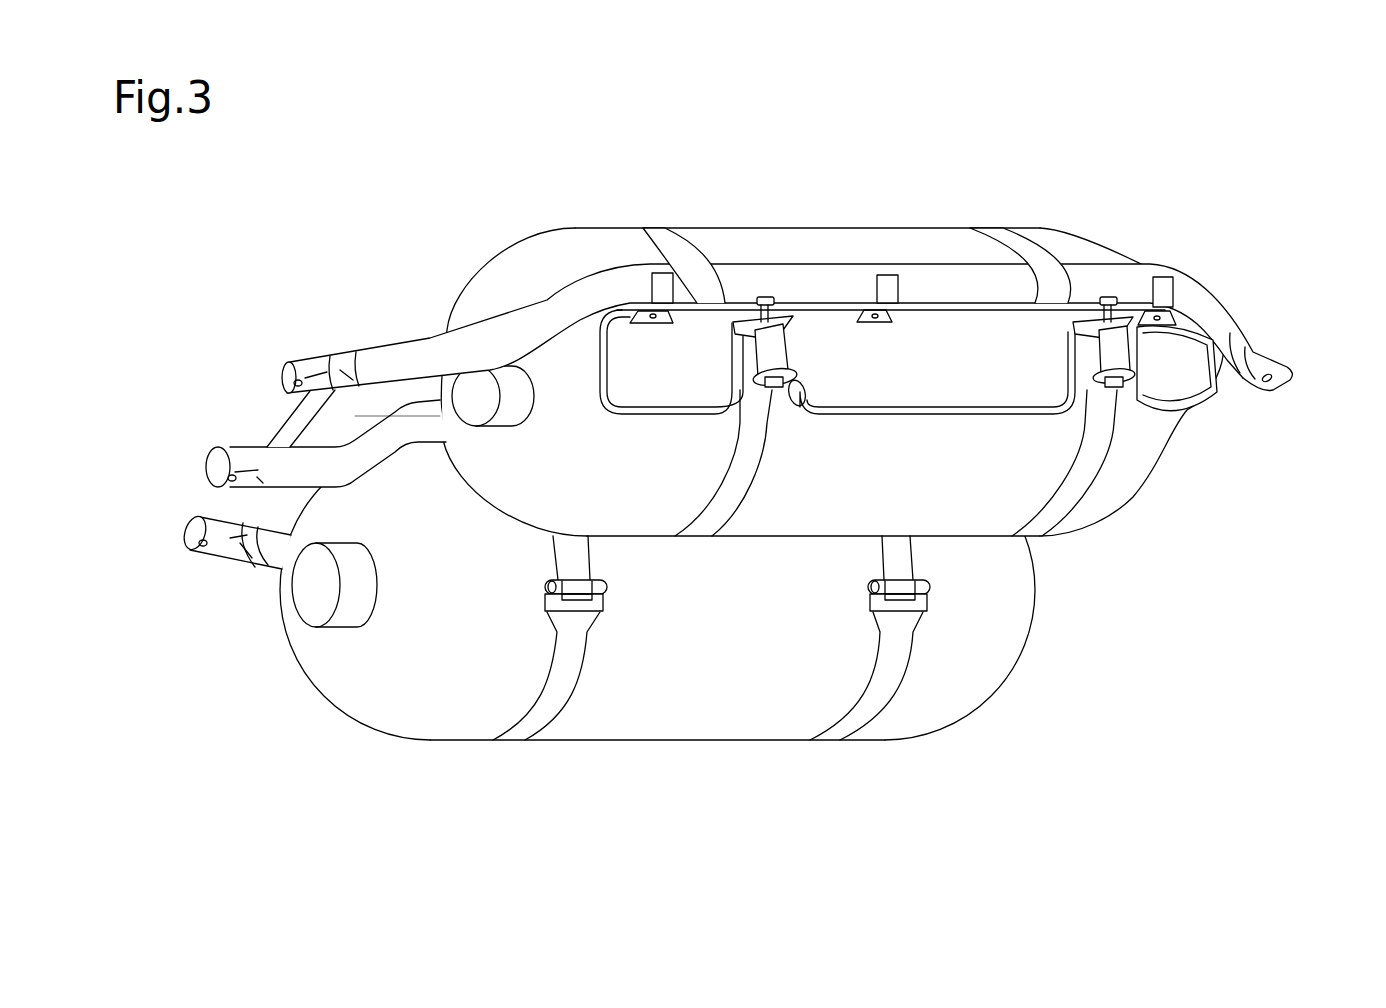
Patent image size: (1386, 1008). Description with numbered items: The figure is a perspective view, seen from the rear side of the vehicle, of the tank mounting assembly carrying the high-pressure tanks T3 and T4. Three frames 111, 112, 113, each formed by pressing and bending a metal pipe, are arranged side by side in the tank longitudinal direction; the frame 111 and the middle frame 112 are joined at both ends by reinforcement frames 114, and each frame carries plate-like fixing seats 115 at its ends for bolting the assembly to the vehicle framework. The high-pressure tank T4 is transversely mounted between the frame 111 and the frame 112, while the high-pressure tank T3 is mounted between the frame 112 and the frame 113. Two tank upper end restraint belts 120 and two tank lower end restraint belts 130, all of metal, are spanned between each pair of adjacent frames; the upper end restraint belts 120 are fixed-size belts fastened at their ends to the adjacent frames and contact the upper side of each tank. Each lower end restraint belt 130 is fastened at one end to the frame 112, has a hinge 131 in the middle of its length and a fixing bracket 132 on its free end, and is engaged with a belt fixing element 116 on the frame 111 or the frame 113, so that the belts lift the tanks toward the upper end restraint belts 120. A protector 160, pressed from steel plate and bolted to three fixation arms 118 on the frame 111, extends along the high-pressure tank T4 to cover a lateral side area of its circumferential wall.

The frame 111 is at (837, 280).
The frame 112 is at (237, 447).
The frame 113 is at (267, 560).
The reinforcement frame 114 is at (287, 433).
The fixing seat 115 is at (347, 357).
The belt fixing element 116 is at (773, 362).
The fixation arm 118 is at (657, 285).
The tank upper end restraint belt 120 is at (660, 237).
The tank lower end restraint belt 130 is at (713, 520).
The hinge 131 is at (608, 585).
The fixing bracket 132 is at (783, 328).
The protector 160 is at (975, 397).
The high-pressure tank T3 is at (398, 720).
The high-pressure tank T4 is at (510, 497).